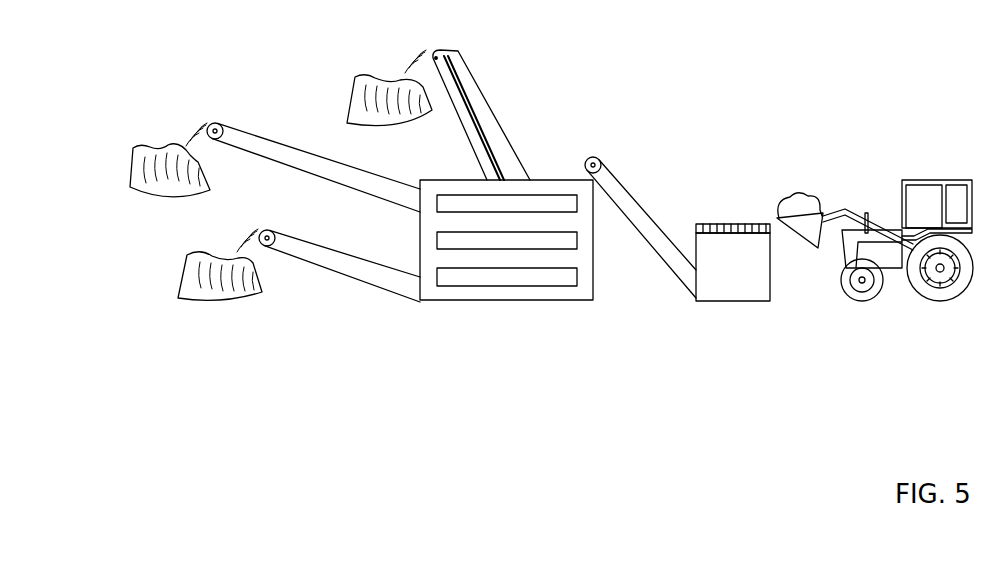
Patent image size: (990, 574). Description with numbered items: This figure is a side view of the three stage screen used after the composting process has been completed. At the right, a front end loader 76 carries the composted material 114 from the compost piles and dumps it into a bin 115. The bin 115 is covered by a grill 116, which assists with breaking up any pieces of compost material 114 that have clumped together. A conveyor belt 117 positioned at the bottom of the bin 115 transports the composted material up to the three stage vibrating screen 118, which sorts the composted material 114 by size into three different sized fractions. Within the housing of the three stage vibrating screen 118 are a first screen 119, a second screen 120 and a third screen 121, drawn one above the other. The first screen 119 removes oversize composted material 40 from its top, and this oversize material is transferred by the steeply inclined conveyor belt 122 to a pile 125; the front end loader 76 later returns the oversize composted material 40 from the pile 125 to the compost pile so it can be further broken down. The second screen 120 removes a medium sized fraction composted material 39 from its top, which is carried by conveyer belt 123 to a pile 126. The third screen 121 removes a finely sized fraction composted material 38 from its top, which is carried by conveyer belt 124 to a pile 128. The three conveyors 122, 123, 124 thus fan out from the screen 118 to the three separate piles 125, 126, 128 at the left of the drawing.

The finely sized fraction composted material 38 is at (247, 288).
The medium sized fraction composted material 39 is at (193, 175).
The oversize composted material 40 is at (363, 100).
The front end loader 76 is at (920, 180).
The composted material 114 is at (800, 192).
The bin 115 is at (733, 301).
The grill 116 is at (730, 224).
The conveyor belt 117 is at (638, 203).
The three stage vibrating screen 118 is at (533, 300).
The first screen 119 is at (453, 195).
The second screen 120 is at (577, 239).
The third screen 121 is at (437, 277).
The conveyor belt 122 is at (470, 68).
The conveyer belt 123 is at (255, 136).
The conveyer belt 124 is at (320, 245).
The pile 125 is at (377, 72).
The pile 126 is at (148, 146).
The pile 128 is at (192, 262).